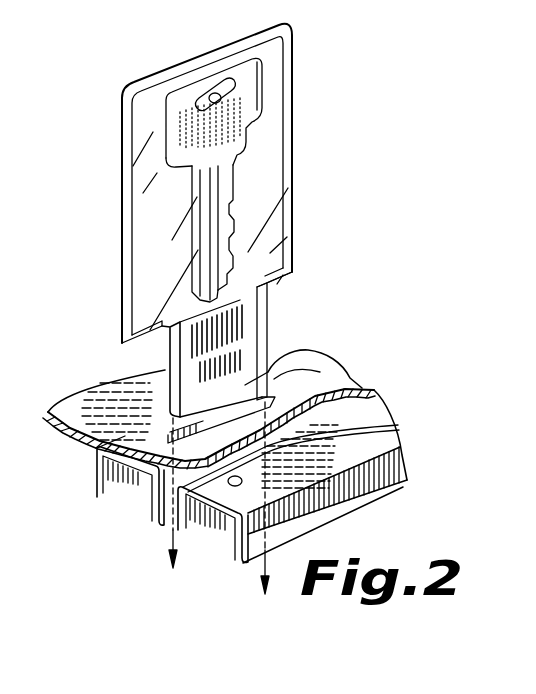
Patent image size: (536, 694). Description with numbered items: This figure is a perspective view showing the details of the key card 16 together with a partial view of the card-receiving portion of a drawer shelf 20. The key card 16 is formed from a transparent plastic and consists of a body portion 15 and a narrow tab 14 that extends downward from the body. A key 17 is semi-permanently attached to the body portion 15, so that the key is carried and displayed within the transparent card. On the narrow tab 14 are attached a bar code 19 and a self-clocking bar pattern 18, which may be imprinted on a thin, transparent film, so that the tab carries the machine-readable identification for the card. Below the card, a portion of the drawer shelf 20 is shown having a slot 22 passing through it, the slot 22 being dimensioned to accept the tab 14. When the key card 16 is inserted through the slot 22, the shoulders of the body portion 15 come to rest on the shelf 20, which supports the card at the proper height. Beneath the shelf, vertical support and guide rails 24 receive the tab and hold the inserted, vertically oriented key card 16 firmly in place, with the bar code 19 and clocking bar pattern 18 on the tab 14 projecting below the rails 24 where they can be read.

The narrow tab 14 is at (170, 346).
The body portion 15 is at (142, 200).
The key card 16 is at (318, 181).
The key 17 is at (248, 106).
The self-clocking bar pattern 18 is at (243, 328).
The bar code 19 is at (250, 372).
The drawer shelf 20 is at (78, 412).
The slot 22 is at (270, 367).
The vertical support and guide rails 24 is at (115, 483).